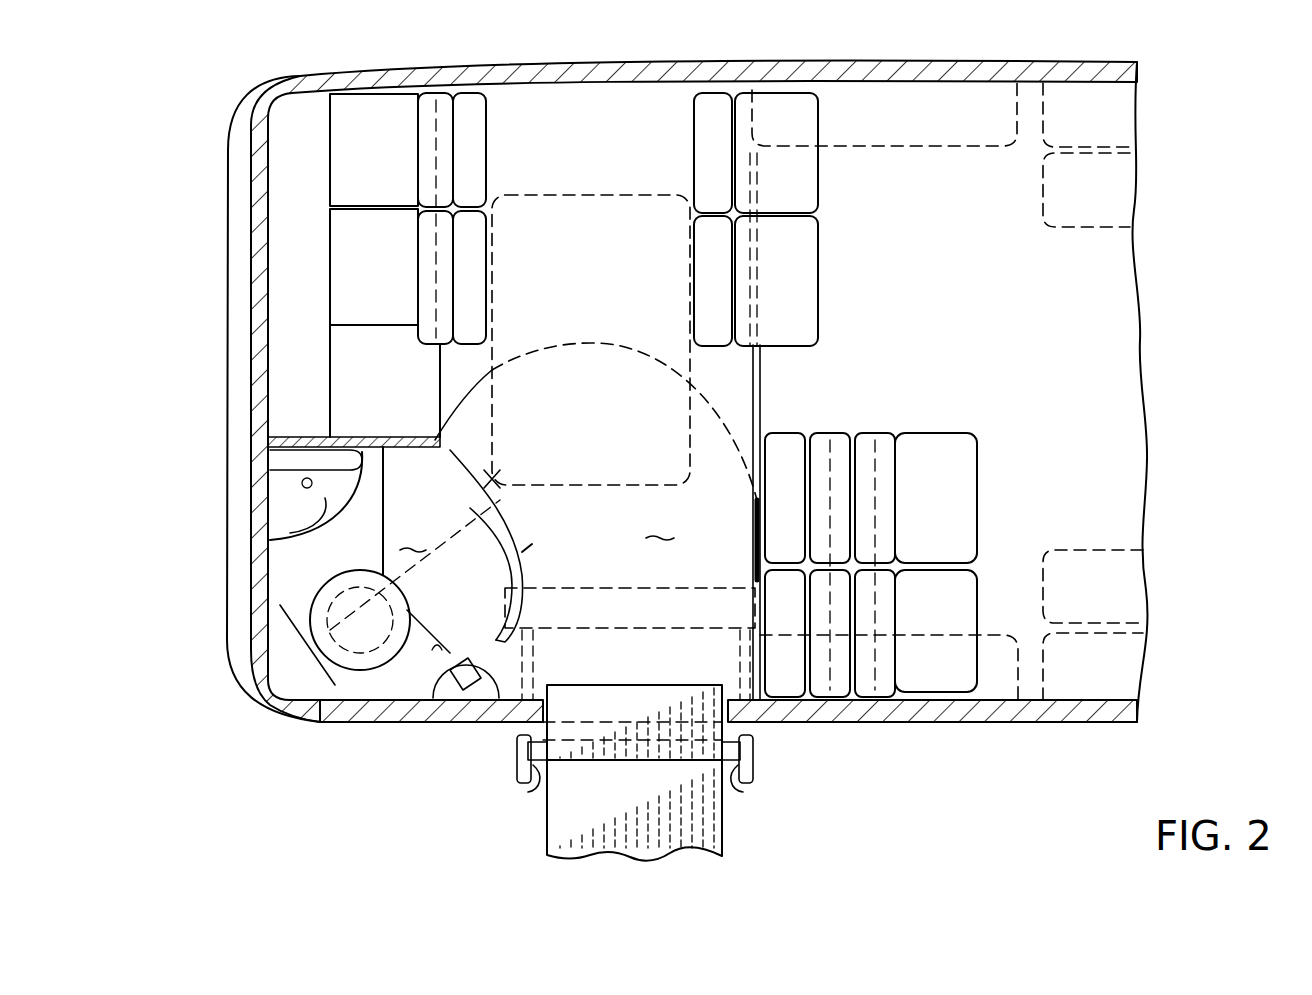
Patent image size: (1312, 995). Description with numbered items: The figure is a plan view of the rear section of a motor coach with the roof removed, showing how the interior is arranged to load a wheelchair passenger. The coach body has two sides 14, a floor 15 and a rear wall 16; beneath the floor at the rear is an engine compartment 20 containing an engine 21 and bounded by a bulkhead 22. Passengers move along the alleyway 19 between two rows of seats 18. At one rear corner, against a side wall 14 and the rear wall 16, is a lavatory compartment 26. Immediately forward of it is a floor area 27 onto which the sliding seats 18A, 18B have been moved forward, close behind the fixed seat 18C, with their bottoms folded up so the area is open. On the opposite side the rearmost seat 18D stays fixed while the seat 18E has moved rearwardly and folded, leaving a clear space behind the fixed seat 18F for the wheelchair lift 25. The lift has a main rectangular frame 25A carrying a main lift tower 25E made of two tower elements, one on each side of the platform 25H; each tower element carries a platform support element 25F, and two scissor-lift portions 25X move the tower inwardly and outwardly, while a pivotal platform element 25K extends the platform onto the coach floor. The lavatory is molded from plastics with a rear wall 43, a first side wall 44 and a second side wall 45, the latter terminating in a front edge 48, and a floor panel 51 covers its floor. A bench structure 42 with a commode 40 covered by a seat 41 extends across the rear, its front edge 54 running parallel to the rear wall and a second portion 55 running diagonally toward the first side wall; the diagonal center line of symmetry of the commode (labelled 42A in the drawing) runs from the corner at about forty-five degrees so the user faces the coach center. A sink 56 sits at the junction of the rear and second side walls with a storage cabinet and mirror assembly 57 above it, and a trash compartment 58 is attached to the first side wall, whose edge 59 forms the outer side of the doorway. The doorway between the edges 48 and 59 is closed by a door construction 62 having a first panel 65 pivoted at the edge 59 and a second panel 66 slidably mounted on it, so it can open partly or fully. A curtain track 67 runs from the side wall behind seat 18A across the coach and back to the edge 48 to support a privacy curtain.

The coach side 14 is at (1040, 722).
The floor 15 is at (1105, 347).
The rear wall 16 is at (250, 345).
The seats 18 is at (889, 355).
The sliding seat 18A is at (780, 430).
The sliding seat 18B is at (845, 430).
The fixed seat 18C is at (960, 470).
The rearmost seat 18D is at (368, 118).
The movable seat 18E is at (485, 125).
The fixed seat 18F is at (788, 110).
The alleyway 19 is at (952, 386).
The engine compartment 20 is at (634, 135).
The engine 21 is at (567, 213).
The bulkhead 22 is at (763, 392).
The wheelchair lift 25 is at (608, 745).
The main rectangular frame 25A is at (636, 600).
The main lift tower 25E is at (518, 748).
The platform support element 25F is at (634, 795).
The platform 25H is at (713, 820).
The pivotal platform element 25K is at (637, 700).
The scissor-lift arrangement 25X is at (540, 638).
The lavatory compartment 26 is at (497, 478).
The floor area 27 is at (630, 568).
The commode 40 is at (390, 612).
The seat 41 is at (330, 575).
The bench structure 42 is at (370, 498).
The door swing path 42A is at (445, 550).
The rear wall 43 is at (232, 612).
The first side wall 44 is at (358, 690).
The second side wall 45 is at (392, 428).
The front edge 48 is at (447, 440).
The floor panel 51 is at (432, 549).
The front edge 54 is at (390, 527).
The second portion 55 is at (436, 648).
The sink 56 is at (305, 528).
The storage cabinet and mirror assembly 57 is at (316, 458).
The trash compartment 58 is at (466, 668).
The edge 59 is at (535, 668).
The door construction 62 is at (534, 545).
The first panel 65 is at (533, 564).
The second panel 66 is at (505, 513).
The curtain track 67 is at (628, 350).